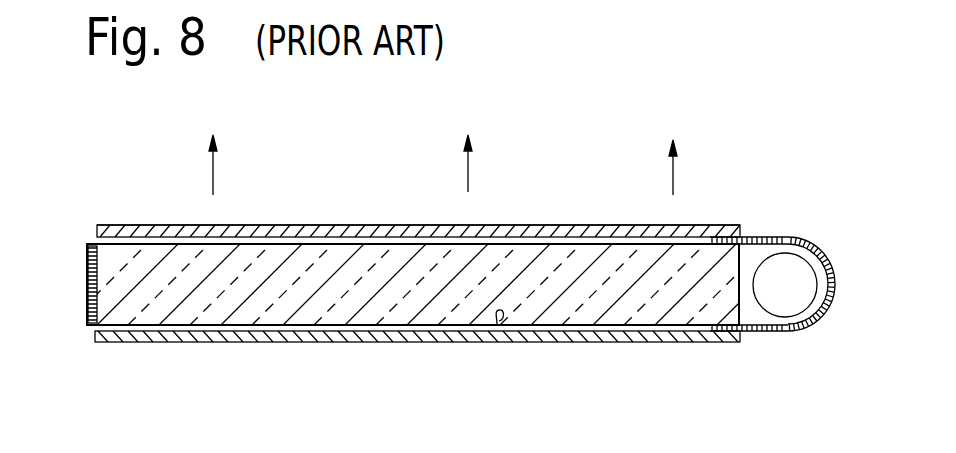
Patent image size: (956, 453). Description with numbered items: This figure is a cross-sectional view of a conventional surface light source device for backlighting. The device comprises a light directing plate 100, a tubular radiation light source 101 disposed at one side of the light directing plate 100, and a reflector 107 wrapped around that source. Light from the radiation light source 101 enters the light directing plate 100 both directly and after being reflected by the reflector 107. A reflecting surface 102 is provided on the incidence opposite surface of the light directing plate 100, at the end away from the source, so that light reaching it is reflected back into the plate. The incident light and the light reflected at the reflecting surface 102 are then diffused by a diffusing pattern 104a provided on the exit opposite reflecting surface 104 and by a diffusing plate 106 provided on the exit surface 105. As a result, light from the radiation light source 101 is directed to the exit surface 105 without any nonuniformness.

The light directing plate 100 is at (257, 273).
The radiation light source 101 is at (782, 303).
The reflecting surface 102 is at (98, 279).
The exit opposite reflecting surface 104 is at (297, 337).
The diffusing pattern 104a is at (497, 324).
The exit surface 105 is at (400, 227).
The diffusing plate 106 is at (545, 230).
The reflector 107 is at (787, 240).